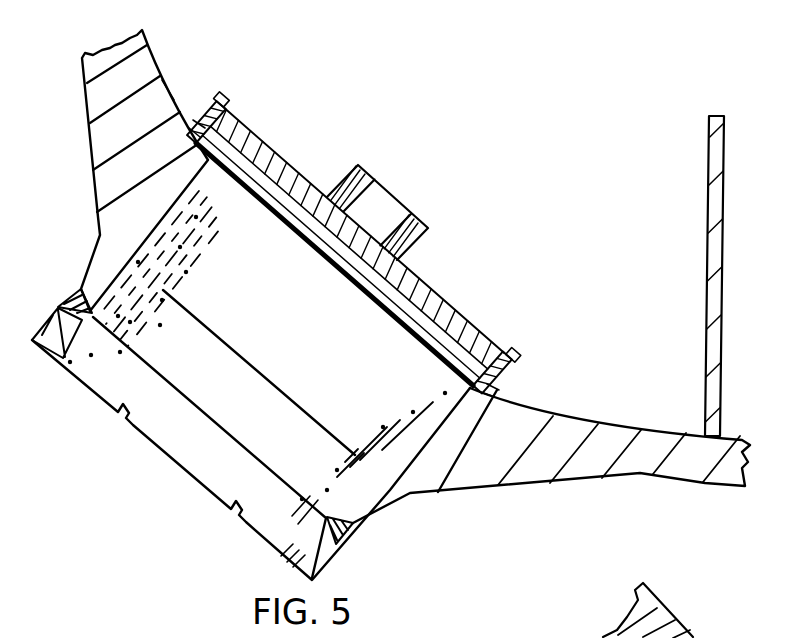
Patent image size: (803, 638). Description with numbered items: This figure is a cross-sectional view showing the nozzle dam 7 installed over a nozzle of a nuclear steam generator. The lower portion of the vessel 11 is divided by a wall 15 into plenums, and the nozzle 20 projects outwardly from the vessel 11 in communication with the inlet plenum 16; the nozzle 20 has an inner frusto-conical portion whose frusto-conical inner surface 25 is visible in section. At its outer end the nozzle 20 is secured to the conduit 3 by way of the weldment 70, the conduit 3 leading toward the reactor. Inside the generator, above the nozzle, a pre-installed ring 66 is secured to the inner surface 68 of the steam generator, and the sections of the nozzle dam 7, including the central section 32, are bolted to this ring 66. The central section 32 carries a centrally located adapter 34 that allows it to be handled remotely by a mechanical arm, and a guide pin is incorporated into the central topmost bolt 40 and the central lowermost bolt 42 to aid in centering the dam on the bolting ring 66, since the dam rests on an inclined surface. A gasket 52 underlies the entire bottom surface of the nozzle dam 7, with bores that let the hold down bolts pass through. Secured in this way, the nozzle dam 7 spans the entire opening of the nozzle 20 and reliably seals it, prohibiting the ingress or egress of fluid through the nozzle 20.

The conduit 3 is at (50, 317).
The nozzle dam 7 is at (466, 278).
The vessel 11 is at (84, 82).
The wall 15 is at (723, 200).
The inlet plenum 16 is at (493, 174).
The nozzle 20 is at (400, 497).
The frusto-conical inner surface 25 is at (177, 226).
The central section 32 is at (497, 343).
The adapter 34 is at (426, 236).
The central topmost bolt 40 is at (222, 106).
The central lowermost bolt 42 is at (513, 353).
The gasket 52 is at (372, 296).
The pre-installed ring 66 is at (195, 127).
The inner surface 68 is at (170, 100).
The weldment 70 is at (352, 523).